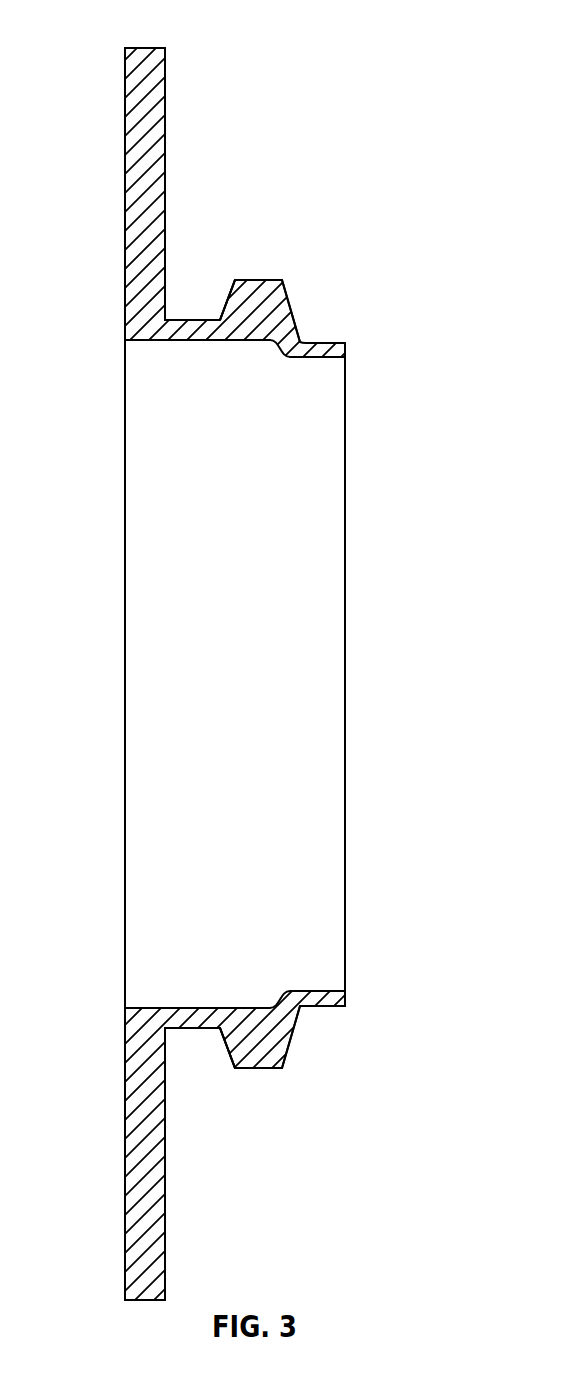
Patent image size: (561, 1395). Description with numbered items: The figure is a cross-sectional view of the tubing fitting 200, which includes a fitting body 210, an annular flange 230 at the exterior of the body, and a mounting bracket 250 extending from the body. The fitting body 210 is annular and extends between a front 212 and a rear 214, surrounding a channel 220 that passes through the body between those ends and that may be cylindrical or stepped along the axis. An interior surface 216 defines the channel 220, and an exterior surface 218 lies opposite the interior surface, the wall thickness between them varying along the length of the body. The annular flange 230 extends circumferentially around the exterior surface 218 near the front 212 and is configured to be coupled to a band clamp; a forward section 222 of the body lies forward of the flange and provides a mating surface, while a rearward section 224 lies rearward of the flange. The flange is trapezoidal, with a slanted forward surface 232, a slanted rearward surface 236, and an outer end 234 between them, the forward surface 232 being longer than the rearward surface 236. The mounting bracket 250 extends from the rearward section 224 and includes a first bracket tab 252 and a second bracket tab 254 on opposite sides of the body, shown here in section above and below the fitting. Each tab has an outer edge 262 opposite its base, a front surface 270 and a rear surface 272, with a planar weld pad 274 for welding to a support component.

The tubing fitting 200 is at (320, 84).
The fitting body 210 is at (209, 1025).
The front 212 is at (345, 677).
The rear 214 is at (124, 833).
The interior surface 216 is at (176, 342).
The exterior surface 218 is at (186, 320).
The channel 220 is at (307, 568).
The forward section 222 is at (325, 342).
The rearward section 224 is at (185, 1030).
The annular flange 230 is at (300, 1028).
The forward surface 232 is at (284, 291).
The outer end 234 is at (256, 280).
The rearward surface 236 is at (226, 303).
The mounting bracket 250 is at (180, 137).
The first bracket tab 252 is at (135, 119).
The second bracket tab 254 is at (137, 1202).
The outer edge 262 is at (148, 47).
The front surface 270 is at (166, 98).
The rear surface 272 is at (125, 239).
The weld pad 274 is at (167, 199).